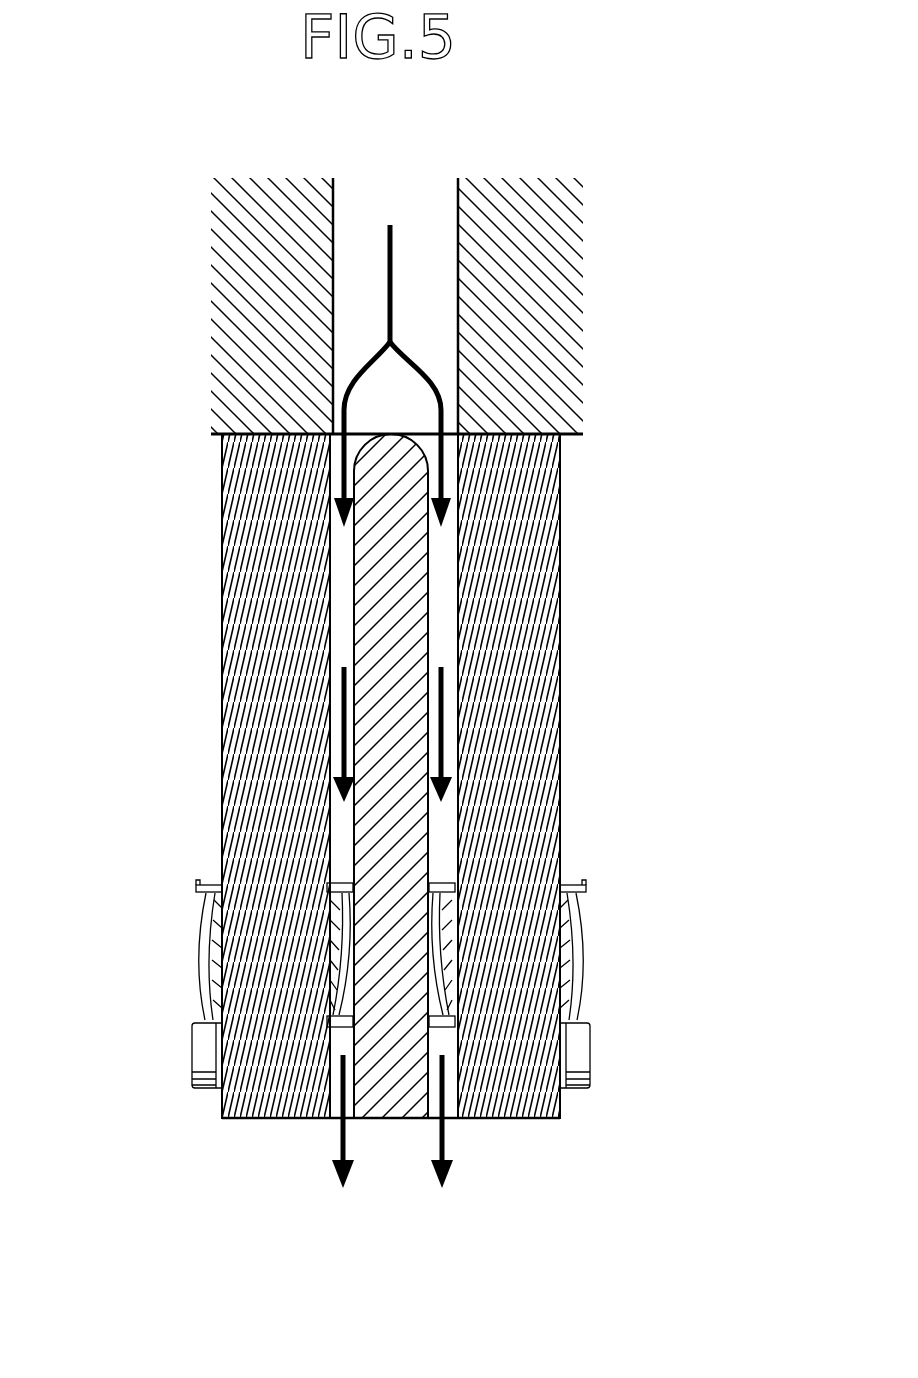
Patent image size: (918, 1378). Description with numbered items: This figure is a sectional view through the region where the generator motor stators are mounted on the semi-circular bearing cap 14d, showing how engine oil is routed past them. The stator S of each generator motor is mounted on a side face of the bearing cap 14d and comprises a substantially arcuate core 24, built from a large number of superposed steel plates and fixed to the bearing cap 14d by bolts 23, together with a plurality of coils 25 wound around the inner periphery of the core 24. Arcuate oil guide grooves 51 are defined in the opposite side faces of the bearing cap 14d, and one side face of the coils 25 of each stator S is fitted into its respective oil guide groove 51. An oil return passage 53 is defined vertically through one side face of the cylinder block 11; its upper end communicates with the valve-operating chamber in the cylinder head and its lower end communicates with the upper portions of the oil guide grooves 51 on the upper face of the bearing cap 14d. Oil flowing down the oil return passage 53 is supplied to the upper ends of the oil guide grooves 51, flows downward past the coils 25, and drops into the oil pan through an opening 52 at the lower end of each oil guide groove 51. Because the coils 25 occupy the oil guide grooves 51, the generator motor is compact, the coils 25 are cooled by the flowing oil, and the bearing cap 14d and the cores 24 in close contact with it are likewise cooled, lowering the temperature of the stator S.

The cylinder block 11 is at (590, 296).
The oil return passage 53 is at (348, 314).
The oil guide groove 51 is at (345, 565).
The core 24 is at (228, 652).
The bearing cap 14d is at (392, 1150).
The opening 52 is at (332, 1098).
The stator S is at (185, 930).
The coil 25 is at (215, 970).
The bolt 23 is at (200, 1050).